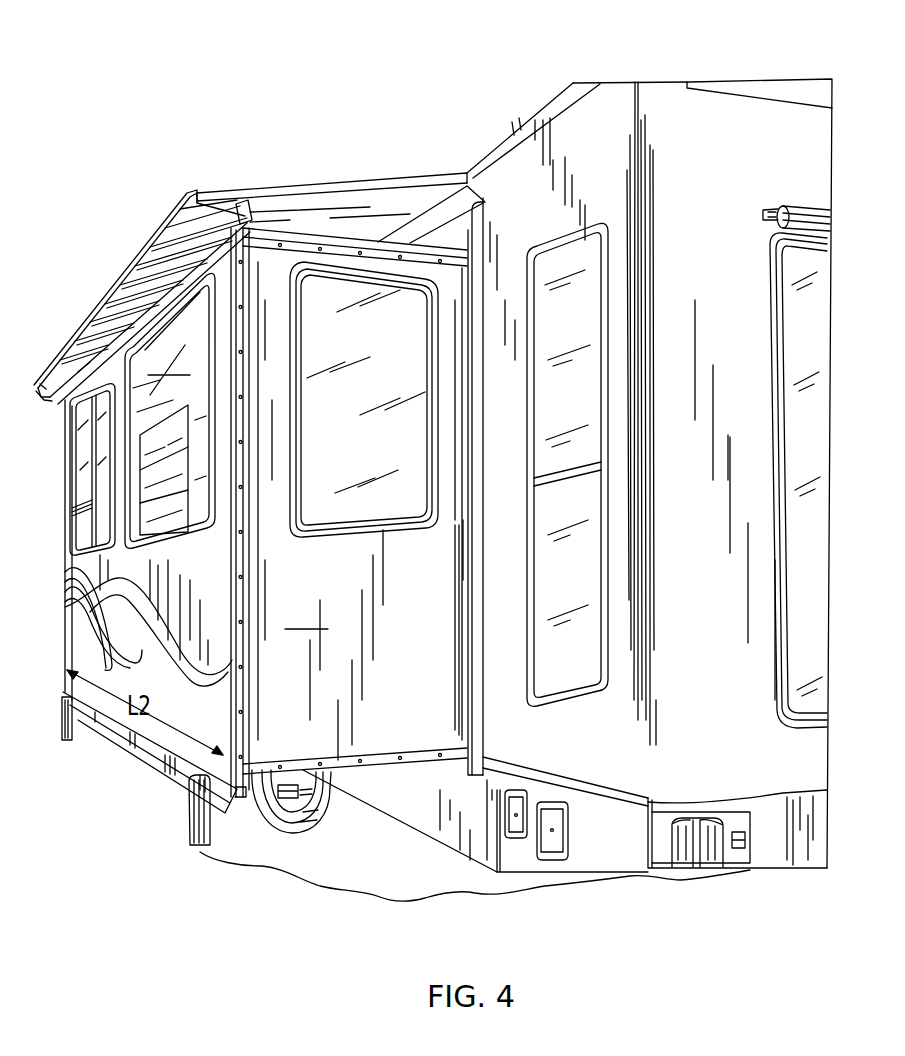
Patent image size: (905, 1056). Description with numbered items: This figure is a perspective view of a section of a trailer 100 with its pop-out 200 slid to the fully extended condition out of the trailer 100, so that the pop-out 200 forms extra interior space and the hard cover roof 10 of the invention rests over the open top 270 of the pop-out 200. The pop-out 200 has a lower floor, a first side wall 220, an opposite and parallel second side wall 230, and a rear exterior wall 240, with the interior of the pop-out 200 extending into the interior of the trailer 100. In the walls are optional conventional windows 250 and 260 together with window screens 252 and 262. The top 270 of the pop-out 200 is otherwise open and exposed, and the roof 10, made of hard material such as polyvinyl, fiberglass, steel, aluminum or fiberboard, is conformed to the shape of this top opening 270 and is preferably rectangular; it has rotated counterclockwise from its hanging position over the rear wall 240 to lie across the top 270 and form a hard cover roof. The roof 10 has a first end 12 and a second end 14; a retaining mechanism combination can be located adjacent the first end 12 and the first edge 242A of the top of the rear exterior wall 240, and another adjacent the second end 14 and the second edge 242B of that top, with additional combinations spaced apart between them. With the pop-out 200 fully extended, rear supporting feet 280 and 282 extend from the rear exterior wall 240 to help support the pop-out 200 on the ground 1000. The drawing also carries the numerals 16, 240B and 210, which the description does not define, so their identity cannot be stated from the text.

The trailer 100 is at (631, 76).
The pop-out 200 is at (349, 512).
The hard cover roof 10 is at (372, 188).
The first end of roof 12 is at (397, 183).
The second end of roof 14 is at (46, 398).
The slide-out roof 16 is at (146, 252).
The top of the pop-out 270 is at (403, 242).
The first edge of top of rear exterior wall 242A is at (246, 202).
The second edge of top of rear exterior wall 242B is at (85, 337).
The side top frame member 240B is at (120, 355).
The rear exterior wall 240 is at (148, 728).
The window 250 is at (140, 435).
The window screen 252 is at (140, 486).
The window 260 is at (84, 531).
The window screen 262 is at (85, 424).
The second side wall 230 is at (64, 628).
The rear supporting foot 280 is at (190, 840).
The rear supporting foot 282 is at (66, 742).
The wheel 210 is at (251, 818).
The first side wall 220 is at (400, 821).
The ground 1000 is at (470, 895).